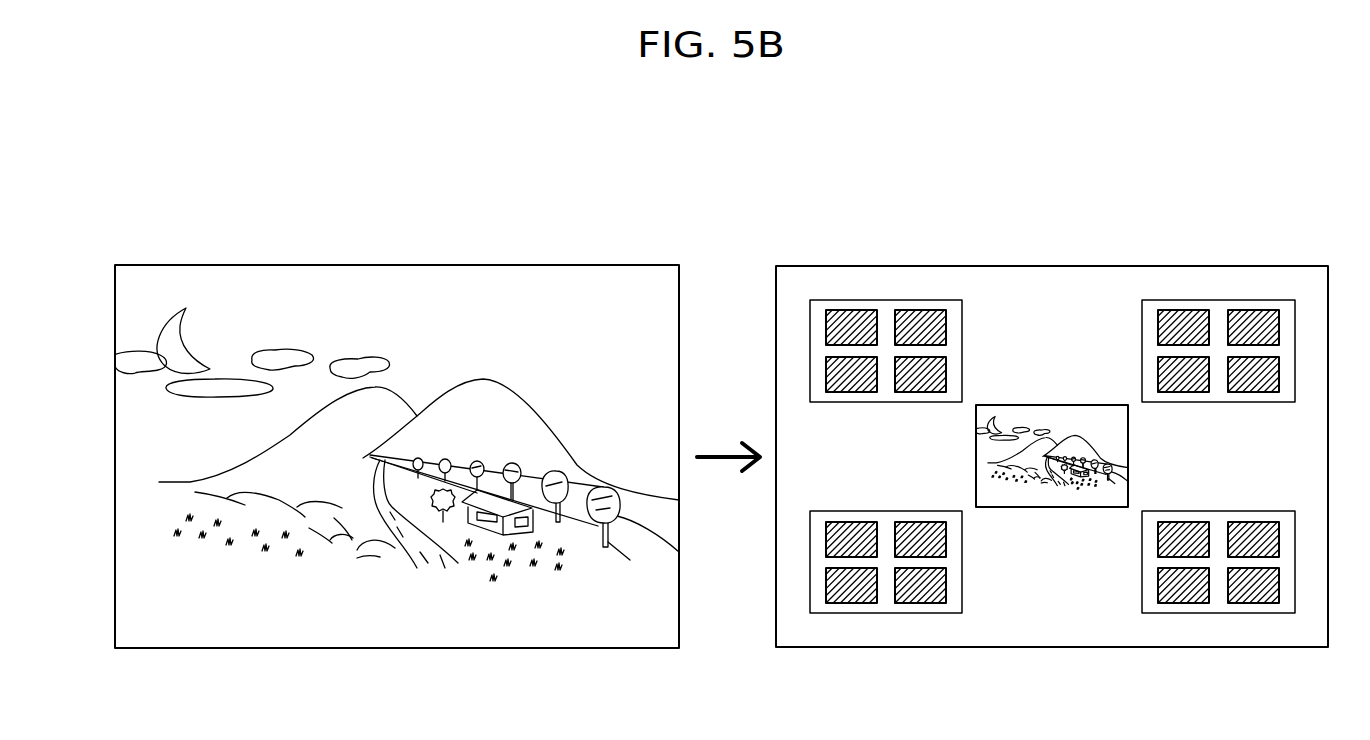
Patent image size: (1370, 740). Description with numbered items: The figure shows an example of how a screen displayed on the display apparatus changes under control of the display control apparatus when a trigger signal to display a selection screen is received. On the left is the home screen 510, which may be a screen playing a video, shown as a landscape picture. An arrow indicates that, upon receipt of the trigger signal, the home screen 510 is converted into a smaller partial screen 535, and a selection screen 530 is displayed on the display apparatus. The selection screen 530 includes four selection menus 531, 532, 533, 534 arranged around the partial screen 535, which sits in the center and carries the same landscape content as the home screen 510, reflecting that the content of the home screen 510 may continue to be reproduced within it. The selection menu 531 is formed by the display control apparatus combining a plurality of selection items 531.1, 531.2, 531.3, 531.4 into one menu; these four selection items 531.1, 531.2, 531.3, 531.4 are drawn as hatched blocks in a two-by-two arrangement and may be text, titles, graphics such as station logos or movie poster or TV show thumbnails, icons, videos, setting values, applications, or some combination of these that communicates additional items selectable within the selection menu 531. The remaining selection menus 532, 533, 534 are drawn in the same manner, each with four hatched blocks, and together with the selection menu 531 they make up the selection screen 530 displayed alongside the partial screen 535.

The home screen 510 is at (395, 265).
The selection screen 530 is at (1053, 266).
The selection menu 531 is at (877, 326).
The selection item 531.1 is at (851, 310).
The selection item 531.2 is at (921, 310).
The selection item 531.3 is at (851, 392).
The selection item 531.4 is at (918, 392).
The selection menu 532 is at (1220, 300).
The selection menu 533 is at (885, 613).
The selection menu 534 is at (1219, 613).
The partial screen 535 is at (1053, 507).